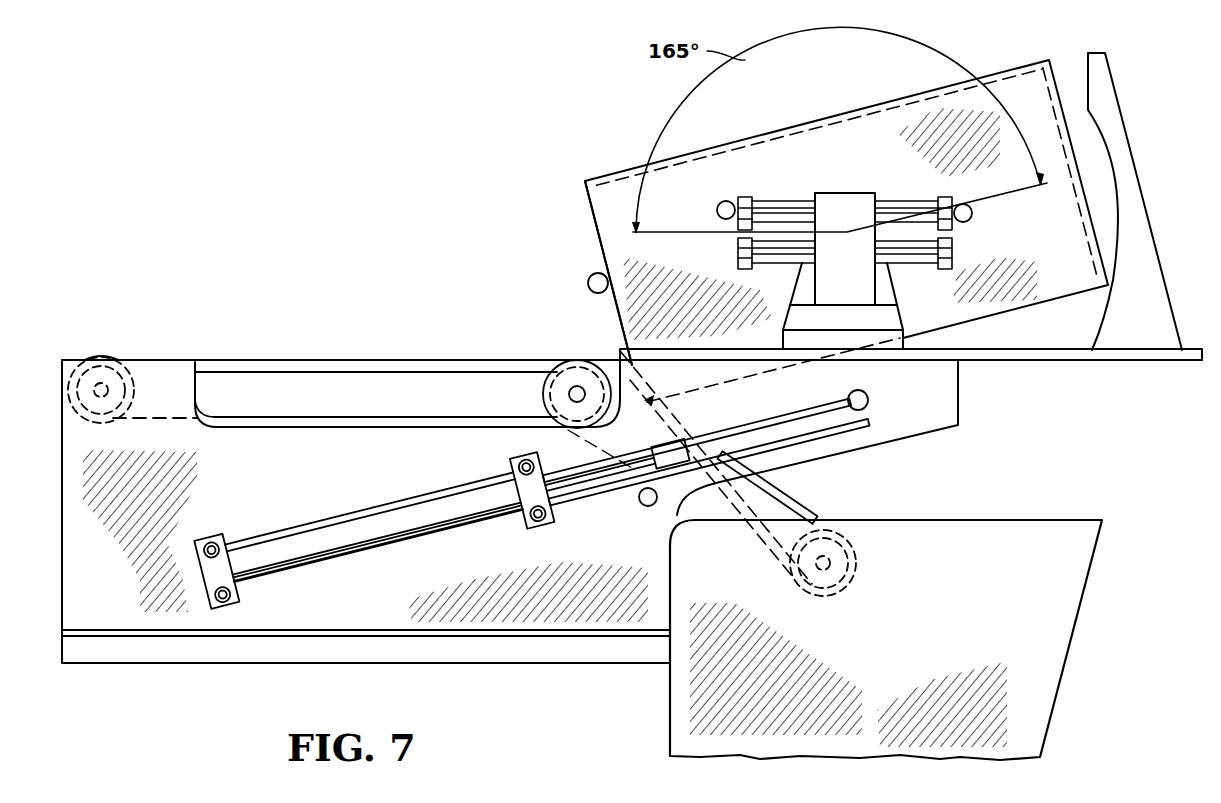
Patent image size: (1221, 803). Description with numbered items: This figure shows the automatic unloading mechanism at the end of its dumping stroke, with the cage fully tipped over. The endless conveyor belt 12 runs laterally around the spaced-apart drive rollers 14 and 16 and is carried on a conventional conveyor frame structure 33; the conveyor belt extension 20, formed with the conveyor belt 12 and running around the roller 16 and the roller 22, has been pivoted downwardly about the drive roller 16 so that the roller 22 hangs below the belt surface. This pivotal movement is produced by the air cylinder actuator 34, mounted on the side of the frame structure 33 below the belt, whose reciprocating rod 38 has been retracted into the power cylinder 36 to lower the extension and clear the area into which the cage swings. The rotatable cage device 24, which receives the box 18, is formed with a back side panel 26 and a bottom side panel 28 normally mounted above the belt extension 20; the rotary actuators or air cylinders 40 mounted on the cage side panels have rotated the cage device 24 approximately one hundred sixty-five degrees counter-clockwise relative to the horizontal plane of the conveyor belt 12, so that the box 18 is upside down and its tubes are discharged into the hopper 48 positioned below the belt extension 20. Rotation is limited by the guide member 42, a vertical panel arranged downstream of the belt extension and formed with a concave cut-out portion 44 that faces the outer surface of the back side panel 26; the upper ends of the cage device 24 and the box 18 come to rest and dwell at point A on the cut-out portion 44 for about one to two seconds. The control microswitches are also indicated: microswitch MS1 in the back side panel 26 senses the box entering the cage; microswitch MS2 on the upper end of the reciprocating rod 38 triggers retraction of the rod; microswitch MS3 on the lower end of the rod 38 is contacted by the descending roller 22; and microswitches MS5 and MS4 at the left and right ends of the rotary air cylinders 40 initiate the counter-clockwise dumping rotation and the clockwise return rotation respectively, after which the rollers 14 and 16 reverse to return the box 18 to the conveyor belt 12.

The endless conveyor belt 12 is at (334, 360).
The drive roller 14 is at (103, 358).
The drive roller 16 is at (577, 360).
The box 18 is at (804, 155).
The conveyor belt extension 20 is at (792, 497).
The roller 22 is at (845, 590).
The rotatable cage device 24 is at (985, 75).
The back side panel 26 is at (1048, 64).
The bottom side panel 28 is at (640, 141).
The conveyor frame structure 33 is at (188, 665).
The air cylinder actuator 34 is at (534, 490).
The power cylinder 36 is at (547, 485).
The reciprocating rod 38 is at (532, 490).
The rotary actuators or air cylinders 40 is at (903, 233).
The guide member 42 is at (1135, 200).
The concave cut-out portion 44 is at (1108, 184).
The hopper 48 is at (1076, 613).
The microswitch MS#1 MS1 is at (590, 279).
The microswitch MS#2 MS2 is at (868, 400).
The microswitch MS#3 MS3 is at (648, 506).
The microswitch MS#4 MS4 is at (972, 213).
The microswitch MS#5 MS5 is at (726, 201).
The point A is at (1120, 280).